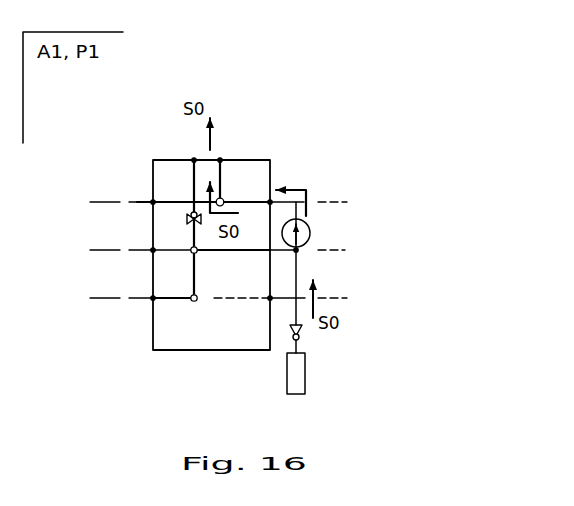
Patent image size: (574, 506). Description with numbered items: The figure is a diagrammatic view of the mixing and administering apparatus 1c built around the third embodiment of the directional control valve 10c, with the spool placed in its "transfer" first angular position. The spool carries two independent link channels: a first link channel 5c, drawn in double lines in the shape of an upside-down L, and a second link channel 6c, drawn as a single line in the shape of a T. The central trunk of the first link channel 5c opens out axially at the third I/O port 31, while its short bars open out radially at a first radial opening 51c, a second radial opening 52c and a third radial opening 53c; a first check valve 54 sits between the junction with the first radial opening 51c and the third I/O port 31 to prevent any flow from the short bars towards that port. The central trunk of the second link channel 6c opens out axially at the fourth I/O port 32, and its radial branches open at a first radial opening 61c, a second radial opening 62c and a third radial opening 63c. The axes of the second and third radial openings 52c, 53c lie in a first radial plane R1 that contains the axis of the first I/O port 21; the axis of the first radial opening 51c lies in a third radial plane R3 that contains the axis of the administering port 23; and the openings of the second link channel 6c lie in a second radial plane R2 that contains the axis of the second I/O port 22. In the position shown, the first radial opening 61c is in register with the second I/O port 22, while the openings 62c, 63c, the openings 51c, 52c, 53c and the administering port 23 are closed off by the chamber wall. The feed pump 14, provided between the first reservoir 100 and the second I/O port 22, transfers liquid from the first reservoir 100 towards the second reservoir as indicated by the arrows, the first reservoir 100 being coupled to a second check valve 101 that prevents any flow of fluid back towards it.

The directional control valve 10c is at (206, 76).
The mixing and administering apparatus 1c is at (284, 78).
The third I/O port 31 is at (193, 157).
The fourth I/O port 32 is at (222, 157).
The second link channel 6c is at (223, 186).
The first radial opening of second link channel 61c is at (281, 186).
The second radial opening of second link channel 62c is at (195, 190).
The third radial opening of second link channel 63c is at (152, 201).
The second I/O port 22 is at (298, 189).
The second radial plane R2 is at (340, 200).
The first check valve 54 is at (186, 213).
The feed pump 14 is at (311, 229).
The administering port 23 is at (152, 254).
The third radial plane R3 is at (336, 252).
The third radial opening of first link channel 53c is at (152, 300).
The first radial plane R1 is at (332, 300).
The first link channel 5c is at (172, 300).
The first radial opening of first link channel 51c is at (264, 252).
The second radial opening of first link channel 52c is at (194, 303).
The first I/O port 21 is at (283, 300).
The second check valve 101 is at (304, 336).
The first reservoir 100 is at (305, 379).